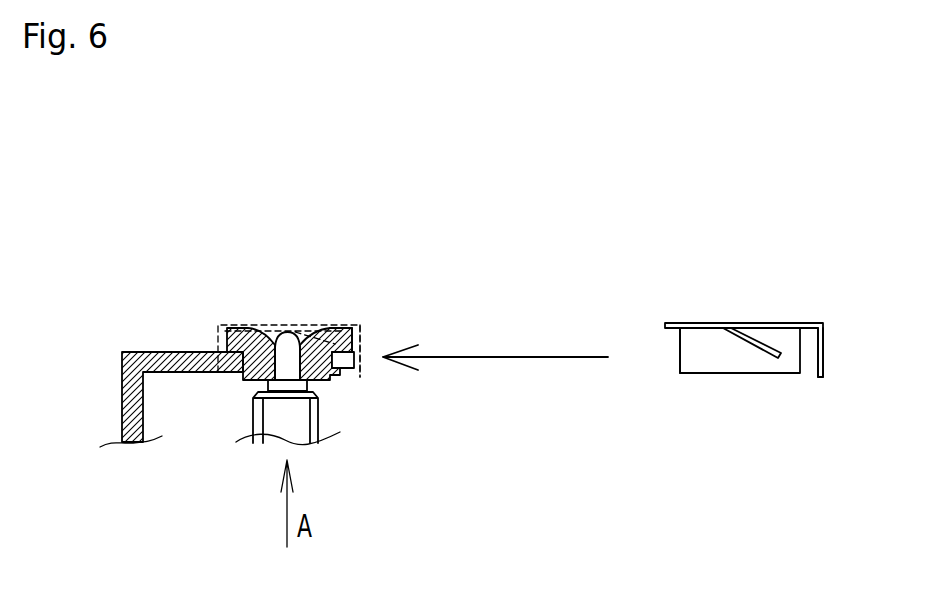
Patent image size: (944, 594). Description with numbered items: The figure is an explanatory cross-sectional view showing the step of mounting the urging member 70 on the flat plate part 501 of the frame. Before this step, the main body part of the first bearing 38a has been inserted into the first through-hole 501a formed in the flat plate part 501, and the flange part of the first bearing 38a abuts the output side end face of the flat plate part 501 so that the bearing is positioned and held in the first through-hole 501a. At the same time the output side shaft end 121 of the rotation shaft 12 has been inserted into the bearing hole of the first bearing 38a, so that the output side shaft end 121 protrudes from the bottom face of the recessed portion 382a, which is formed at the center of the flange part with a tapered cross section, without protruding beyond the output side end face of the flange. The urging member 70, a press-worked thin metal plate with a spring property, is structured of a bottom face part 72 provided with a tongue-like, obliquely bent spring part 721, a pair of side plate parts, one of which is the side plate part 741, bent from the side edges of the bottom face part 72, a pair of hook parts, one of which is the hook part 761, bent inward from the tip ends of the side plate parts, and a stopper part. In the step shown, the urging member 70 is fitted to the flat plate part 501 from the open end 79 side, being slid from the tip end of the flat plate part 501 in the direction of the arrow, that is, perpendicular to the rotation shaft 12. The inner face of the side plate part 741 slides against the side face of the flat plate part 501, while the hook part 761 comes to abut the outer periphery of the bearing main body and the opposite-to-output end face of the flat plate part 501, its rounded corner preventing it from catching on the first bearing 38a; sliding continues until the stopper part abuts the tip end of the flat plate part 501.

The flat plate part 501 is at (177, 352).
The first through-hole 501a is at (243, 330).
The output side shaft end 121 is at (286, 342).
The recessed portion 382a is at (322, 330).
The first bearing 38a is at (343, 330).
The rotation shaft 12 is at (305, 420).
The hook part 761 is at (230, 376).
The urging member 70 is at (737, 321).
The bottom face part 72 is at (766, 323).
The open end 79 is at (672, 342).
The spring part 721 is at (776, 357).
The side plate part 741 is at (725, 373).